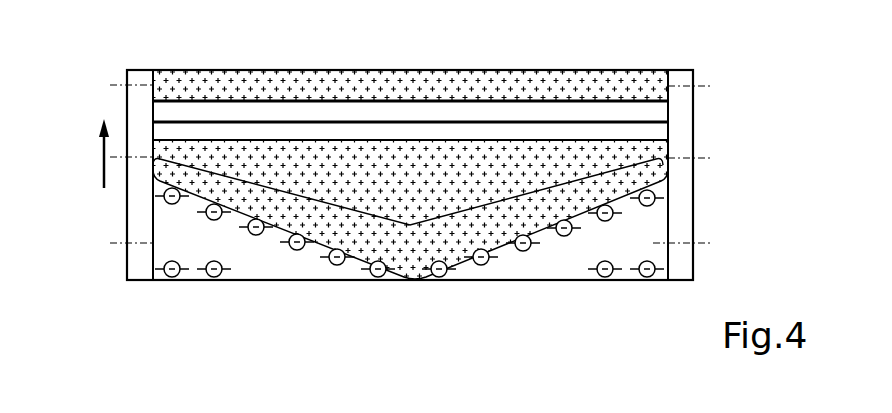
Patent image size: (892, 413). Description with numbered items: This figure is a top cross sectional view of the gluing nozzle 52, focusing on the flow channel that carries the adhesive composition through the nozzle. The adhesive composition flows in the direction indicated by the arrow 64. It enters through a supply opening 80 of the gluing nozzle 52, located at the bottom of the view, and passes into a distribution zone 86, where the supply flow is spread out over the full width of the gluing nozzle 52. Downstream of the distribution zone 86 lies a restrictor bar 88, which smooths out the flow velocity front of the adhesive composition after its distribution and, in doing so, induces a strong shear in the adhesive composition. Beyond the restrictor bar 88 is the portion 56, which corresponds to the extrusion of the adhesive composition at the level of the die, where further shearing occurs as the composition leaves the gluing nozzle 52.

The gluing nozzle 52 is at (788, 70).
The portion corresponding to extrusion at the die level 56 is at (733, 69).
The restrictor bar 88 is at (733, 103).
The distribution zone 86 is at (466, 263).
The supply opening 80 is at (407, 306).
The arrow 64 is at (104, 161).